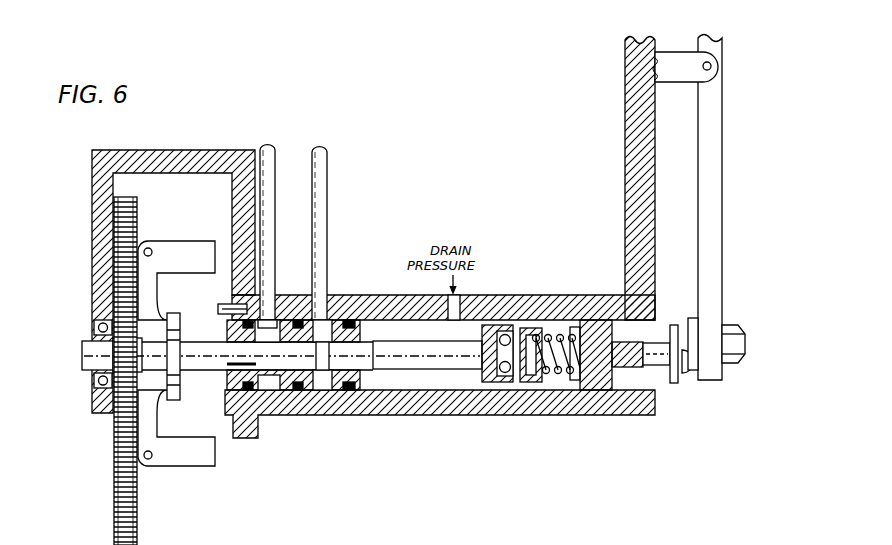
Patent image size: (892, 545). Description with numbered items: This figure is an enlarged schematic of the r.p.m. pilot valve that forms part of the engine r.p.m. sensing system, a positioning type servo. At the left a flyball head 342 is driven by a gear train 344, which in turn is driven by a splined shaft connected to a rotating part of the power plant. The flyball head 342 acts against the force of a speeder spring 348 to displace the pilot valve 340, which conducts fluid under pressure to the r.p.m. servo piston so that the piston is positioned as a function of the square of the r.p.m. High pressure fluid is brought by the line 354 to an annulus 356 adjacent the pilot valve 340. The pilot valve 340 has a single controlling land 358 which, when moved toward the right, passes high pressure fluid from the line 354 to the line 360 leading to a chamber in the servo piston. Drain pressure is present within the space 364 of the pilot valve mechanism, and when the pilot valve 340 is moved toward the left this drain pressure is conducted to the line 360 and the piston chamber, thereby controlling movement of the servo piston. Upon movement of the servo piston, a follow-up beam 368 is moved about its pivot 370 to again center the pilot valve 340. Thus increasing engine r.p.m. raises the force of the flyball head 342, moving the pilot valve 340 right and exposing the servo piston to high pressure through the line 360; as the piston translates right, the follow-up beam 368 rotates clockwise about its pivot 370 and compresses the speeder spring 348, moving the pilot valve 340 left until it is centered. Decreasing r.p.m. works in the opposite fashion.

The r.p.m. pilot valve 340 is at (405, 345).
The flyball head 342 is at (155, 242).
The gear train 344 is at (179, 371).
The speeder spring 348 is at (555, 340).
The line 354 is at (273, 150).
The annulus 356 is at (275, 322).
The controlling land 358 is at (337, 320).
The line 360 is at (327, 153).
The space 364 is at (455, 332).
The follow-up beam 368 is at (715, 268).
The pivot 370 is at (718, 68).